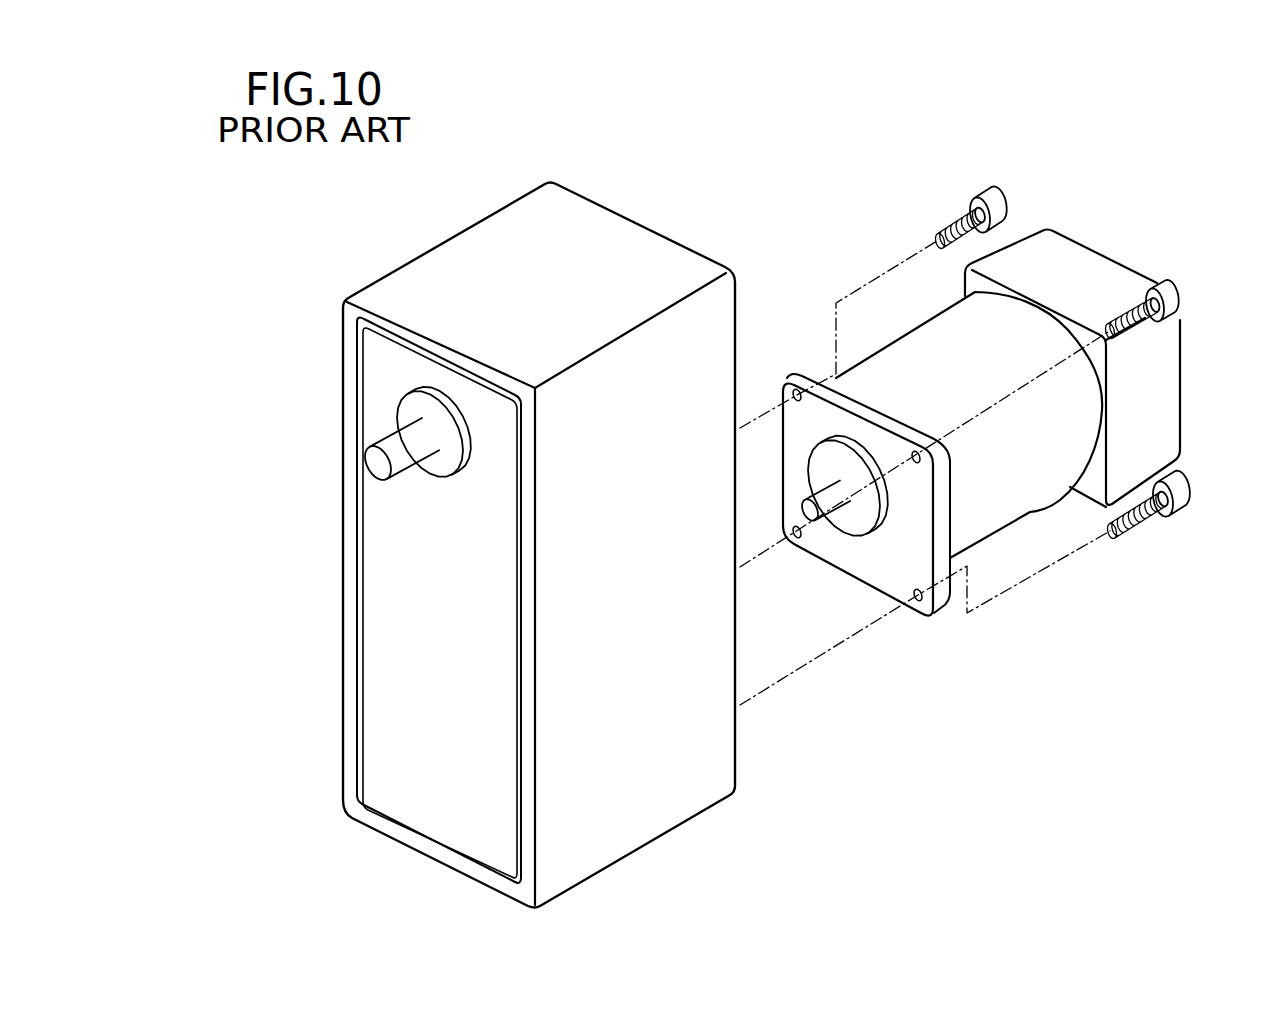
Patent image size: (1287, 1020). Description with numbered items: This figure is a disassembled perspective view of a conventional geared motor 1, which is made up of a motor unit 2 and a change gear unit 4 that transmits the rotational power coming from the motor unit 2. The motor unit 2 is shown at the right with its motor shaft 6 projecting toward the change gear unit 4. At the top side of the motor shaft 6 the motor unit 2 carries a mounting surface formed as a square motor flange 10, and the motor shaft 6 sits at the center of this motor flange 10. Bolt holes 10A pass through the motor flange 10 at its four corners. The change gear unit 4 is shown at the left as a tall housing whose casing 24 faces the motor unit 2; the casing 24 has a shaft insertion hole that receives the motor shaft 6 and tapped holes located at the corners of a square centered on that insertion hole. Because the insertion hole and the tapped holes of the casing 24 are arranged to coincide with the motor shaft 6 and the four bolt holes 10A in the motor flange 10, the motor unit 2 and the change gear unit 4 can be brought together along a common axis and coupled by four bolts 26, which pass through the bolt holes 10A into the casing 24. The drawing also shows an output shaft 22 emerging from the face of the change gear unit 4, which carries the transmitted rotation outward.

The geared motor 1 is at (1001, 422).
The motor unit 2 is at (1120, 251).
The change gear unit 4 is at (509, 512).
The motor shaft 6 is at (832, 500).
The motor flange 10 is at (942, 588).
The bolt holes 10A is at (917, 603).
The output shaft 22 is at (388, 445).
The casing 24 is at (655, 807).
The bolts 26 is at (1005, 200).